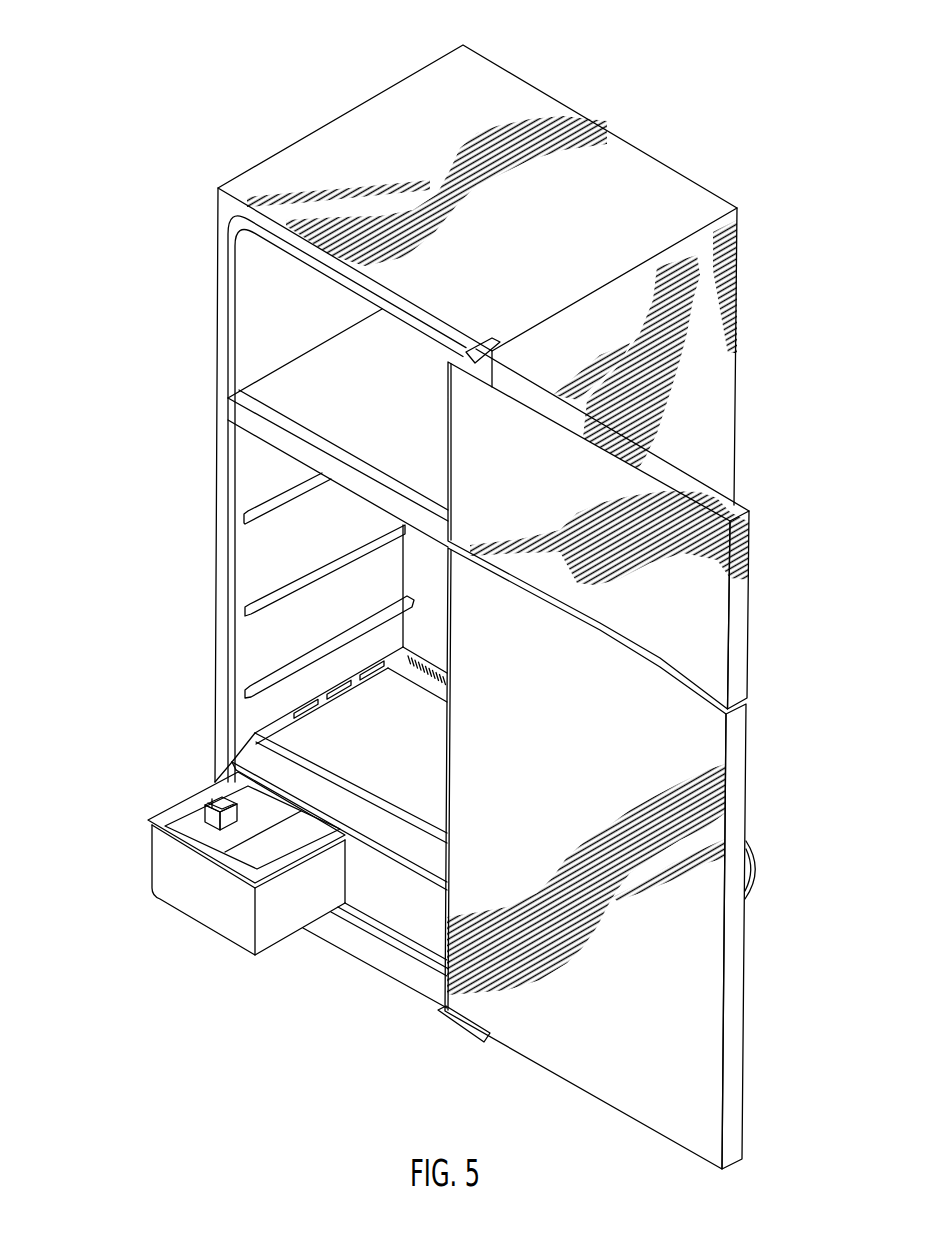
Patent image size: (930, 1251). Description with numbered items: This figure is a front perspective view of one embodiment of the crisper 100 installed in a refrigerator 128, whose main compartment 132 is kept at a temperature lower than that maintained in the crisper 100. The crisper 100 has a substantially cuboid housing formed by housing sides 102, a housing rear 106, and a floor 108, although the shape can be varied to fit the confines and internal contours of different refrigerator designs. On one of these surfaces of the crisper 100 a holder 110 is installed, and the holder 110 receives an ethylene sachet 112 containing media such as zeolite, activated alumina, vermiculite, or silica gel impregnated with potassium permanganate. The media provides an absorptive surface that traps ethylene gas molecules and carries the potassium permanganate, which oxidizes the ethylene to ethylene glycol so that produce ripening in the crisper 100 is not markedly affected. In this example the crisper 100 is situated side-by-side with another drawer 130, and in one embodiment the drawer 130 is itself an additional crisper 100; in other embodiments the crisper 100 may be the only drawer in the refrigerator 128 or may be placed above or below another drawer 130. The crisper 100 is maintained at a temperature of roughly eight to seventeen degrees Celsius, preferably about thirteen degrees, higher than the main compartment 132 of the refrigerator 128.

The crisper 100 is at (254, 839).
The housing sides 102 is at (167, 803).
The housing rear 106 is at (232, 920).
The floor 108 is at (298, 833).
The holder 110 is at (182, 820).
The ethylene sachet 112 is at (213, 805).
The refrigerator 128 is at (702, 108).
The drawer 130 is at (397, 905).
The main compartment 132 is at (376, 598).